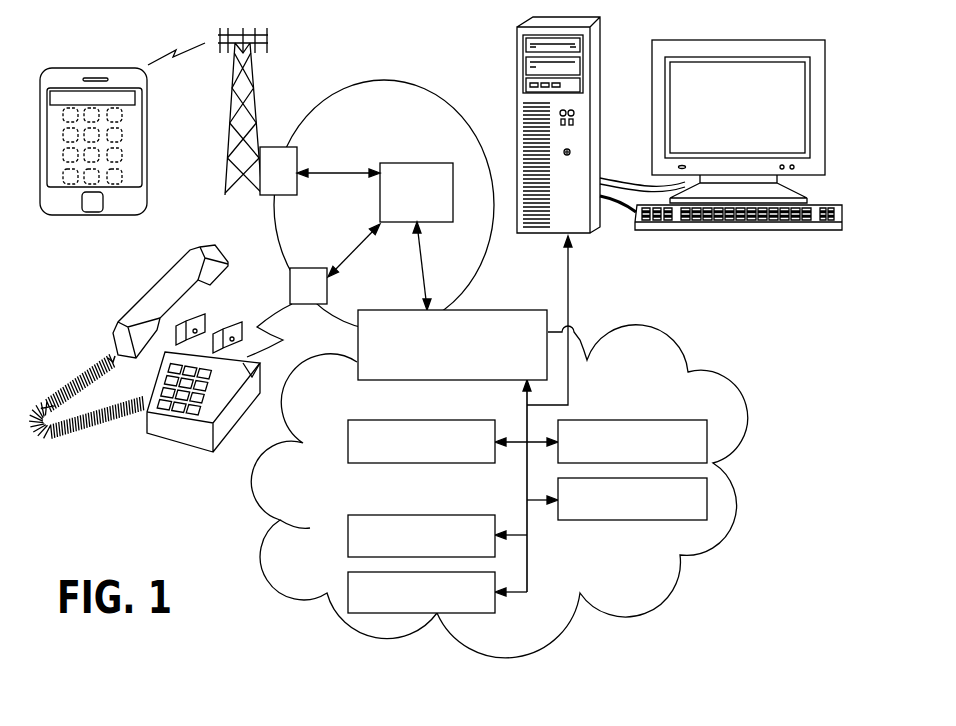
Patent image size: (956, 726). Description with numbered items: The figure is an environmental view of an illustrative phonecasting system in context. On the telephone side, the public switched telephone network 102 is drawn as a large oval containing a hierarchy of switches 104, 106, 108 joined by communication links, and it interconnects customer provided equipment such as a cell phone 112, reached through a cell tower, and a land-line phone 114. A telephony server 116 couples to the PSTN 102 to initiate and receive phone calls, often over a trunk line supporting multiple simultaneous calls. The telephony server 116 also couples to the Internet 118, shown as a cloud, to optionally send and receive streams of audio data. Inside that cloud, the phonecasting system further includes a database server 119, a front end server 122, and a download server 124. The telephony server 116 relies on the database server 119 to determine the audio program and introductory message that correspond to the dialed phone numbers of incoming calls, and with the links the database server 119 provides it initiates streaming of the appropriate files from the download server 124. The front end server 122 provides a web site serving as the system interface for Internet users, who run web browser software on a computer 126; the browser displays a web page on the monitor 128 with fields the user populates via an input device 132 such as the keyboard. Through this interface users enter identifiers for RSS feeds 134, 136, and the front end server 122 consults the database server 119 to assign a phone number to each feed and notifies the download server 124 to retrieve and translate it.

The public switched telephone network 102 is at (392, 80).
The switch 104 is at (447, 163).
The switch 106 is at (297, 162).
The switch 108 is at (290, 292).
The cell phone 112 is at (93, 218).
The land-line phone 114 is at (167, 445).
The telephony server 116 is at (412, 380).
The Internet 118 is at (275, 518).
The database server 119 is at (410, 463).
The front end server 122 is at (652, 418).
The download server 124 is at (605, 520).
The computer 126 is at (600, 147).
The monitor 128 is at (817, 173).
The input device 132 is at (818, 230).
The RSS feed 134 is at (363, 513).
The RSS feed 136 is at (353, 570).